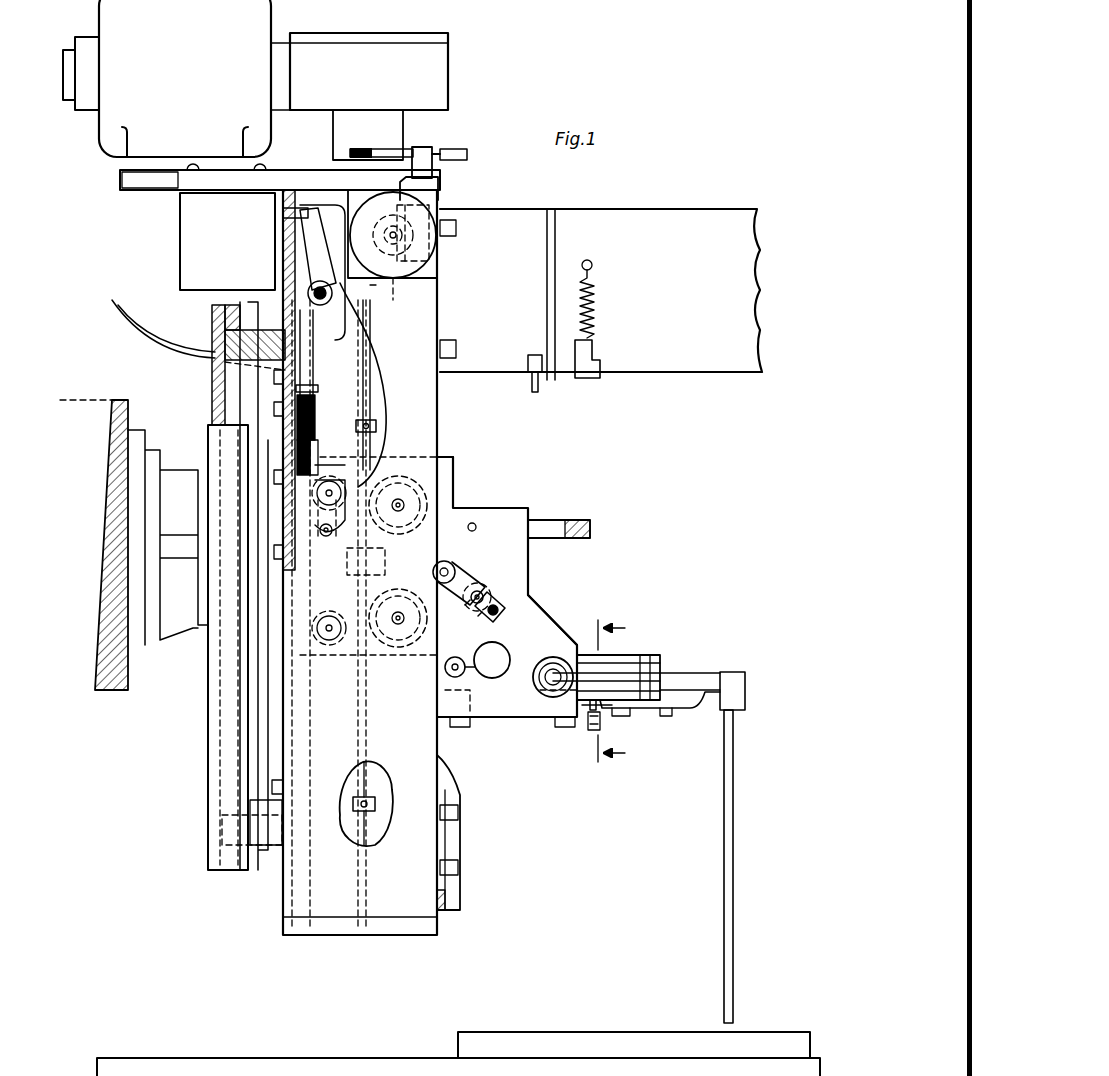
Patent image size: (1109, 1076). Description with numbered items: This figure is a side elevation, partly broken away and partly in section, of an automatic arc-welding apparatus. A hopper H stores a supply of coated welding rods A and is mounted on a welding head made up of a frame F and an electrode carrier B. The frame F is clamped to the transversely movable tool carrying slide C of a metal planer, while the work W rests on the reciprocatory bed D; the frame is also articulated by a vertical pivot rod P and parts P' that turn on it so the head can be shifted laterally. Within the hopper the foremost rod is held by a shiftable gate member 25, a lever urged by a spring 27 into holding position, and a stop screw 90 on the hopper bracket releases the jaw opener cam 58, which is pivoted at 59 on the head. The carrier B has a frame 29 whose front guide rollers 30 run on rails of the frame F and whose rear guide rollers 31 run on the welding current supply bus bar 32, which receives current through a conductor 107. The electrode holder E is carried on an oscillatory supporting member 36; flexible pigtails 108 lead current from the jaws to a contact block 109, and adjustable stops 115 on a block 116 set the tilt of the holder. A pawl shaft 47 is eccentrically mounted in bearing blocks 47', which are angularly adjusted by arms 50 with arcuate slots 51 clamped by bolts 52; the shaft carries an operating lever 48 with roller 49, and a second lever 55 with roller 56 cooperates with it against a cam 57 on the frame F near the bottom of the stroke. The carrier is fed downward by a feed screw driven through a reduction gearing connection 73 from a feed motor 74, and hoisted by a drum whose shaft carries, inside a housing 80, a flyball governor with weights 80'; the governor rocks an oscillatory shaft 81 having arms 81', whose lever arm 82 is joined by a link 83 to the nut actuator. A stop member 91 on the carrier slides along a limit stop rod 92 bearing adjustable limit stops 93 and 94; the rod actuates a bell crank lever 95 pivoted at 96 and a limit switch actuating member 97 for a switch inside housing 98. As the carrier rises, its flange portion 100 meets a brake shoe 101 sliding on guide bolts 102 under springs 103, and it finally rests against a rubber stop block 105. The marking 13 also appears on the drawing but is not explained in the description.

The reduction gearing driving connection 73 is at (432, 78).
The feed motor 74 is at (106, 132).
The housing 80 is at (370, 211).
The weights 80' is at (397, 286).
The oscillatory shaft 81 is at (442, 180).
The arms 81' is at (440, 221).
The lever arm 82 is at (381, 149).
The link 83 is at (432, 156).
The limit switch actuating member 97 is at (283, 213).
The housing 98 is at (180, 230).
The bell crank lever 95 is at (304, 243).
The pivot 96 is at (308, 290).
The conductor 107 is at (142, 340).
The stop block 105 is at (300, 318).
The guide bolts 102 is at (312, 393).
The limit stop rod 92 is at (362, 395).
The limit stop 94 is at (377, 426).
The springs 103 is at (315, 428).
The brake shoe 101 is at (318, 447).
The flange portion 100 is at (320, 472).
The bus bar 32 is at (292, 507).
The front guide rollers 30 is at (416, 495).
The rear guide rollers 31 is at (329, 646).
The stop member 91 is at (372, 568).
The limit stop 93 is at (377, 803).
The cam 57 is at (456, 790).
The pivot 59 is at (473, 522).
The jaw opener cam 58 is at (548, 520).
The roller 49 is at (444, 562).
The operating lever 48 is at (462, 575).
The arms 50 is at (483, 590).
The arcuate slot 51 is at (496, 600).
The clamping bolt 52 is at (498, 611).
The shaft 47 is at (455, 600).
The bearing blocks 47' is at (464, 623).
The operating lever 55 is at (477, 658).
The roller 56 is at (460, 677).
The carrier frame 29 is at (540, 618).
The dimension 13 is at (604, 689).
The supporting member 36 is at (600, 655).
The block 116 is at (593, 700).
The flexible metal pigtails 108 is at (650, 710).
The contact block 109 is at (596, 725).
The adjustable stops 115 is at (588, 730).
The spring 27 is at (592, 318).
The gate member 25 is at (566, 380).
The stop screw 90 is at (535, 394).
The hopper H is at (652, 212).
The frame F is at (430, 442).
The electrode carrier B is at (498, 508).
The electrode holder E is at (649, 678).
The coated welding rods A is at (737, 887).
The pivot rod P is at (221, 586).
The parts P' is at (226, 575).
The tool carrying slide C is at (140, 666).
The reciprocatory bed D is at (415, 1060).
The work W is at (577, 1032).